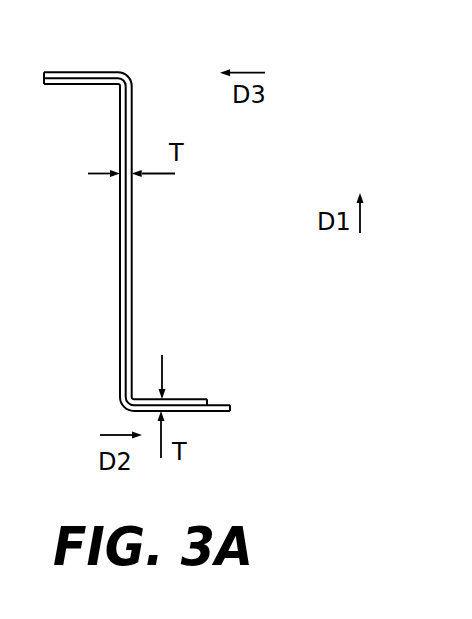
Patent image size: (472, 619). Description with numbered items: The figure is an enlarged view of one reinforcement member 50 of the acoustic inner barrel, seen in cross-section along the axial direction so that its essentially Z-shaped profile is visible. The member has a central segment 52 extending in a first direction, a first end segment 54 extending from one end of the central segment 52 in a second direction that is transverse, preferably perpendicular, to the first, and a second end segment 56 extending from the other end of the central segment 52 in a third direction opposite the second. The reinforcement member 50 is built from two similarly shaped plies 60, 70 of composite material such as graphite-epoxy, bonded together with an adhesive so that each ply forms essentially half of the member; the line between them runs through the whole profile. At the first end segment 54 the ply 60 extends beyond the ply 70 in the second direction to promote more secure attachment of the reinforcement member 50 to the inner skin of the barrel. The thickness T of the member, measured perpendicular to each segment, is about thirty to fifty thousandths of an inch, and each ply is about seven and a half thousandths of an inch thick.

The reinforcement member 50 is at (189, 198).
The central segment 52 is at (137, 237).
The first end segment 54 is at (184, 388).
The second end segment 56 is at (96, 62).
The ply 60 is at (119, 295).
The ply 70 is at (126, 262).